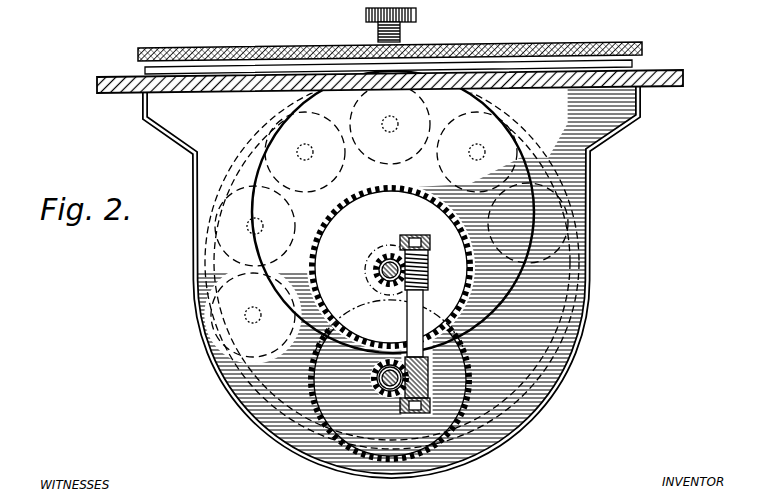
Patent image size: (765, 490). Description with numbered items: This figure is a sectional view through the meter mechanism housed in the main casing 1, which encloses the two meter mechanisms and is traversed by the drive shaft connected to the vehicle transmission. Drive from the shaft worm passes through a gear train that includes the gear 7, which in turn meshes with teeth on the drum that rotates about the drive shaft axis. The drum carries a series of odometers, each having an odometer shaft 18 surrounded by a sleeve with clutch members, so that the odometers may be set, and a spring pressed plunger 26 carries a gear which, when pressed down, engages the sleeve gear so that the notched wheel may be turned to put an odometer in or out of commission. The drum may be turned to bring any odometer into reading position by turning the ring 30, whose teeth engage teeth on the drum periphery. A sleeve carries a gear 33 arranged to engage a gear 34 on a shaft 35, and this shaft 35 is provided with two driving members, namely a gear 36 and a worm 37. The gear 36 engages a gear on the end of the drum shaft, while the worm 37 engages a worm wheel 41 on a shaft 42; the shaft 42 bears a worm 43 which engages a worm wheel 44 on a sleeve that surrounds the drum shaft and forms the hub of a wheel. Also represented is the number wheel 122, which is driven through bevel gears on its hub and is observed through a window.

The main casing 1 is at (97, 77).
The gear 7 is at (294, 149).
The odometer shaft 18 is at (485, 150).
The spring pressed plunger 26 is at (402, 32).
The ring 30 is at (183, 46).
The gear 33 is at (366, 286).
The gear 34 is at (385, 437).
The shaft 35 is at (391, 360).
The gear 36 is at (376, 375).
The worm 37 is at (378, 391).
The worm wheel 41 is at (429, 382).
The shaft 42 is at (408, 311).
The worm 43 is at (428, 269).
The worm wheel 44 is at (378, 263).
The number wheel 122 is at (255, 150).